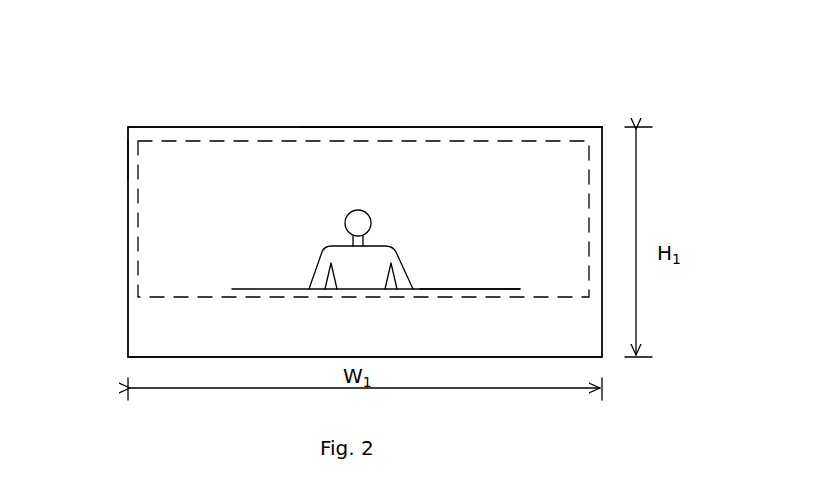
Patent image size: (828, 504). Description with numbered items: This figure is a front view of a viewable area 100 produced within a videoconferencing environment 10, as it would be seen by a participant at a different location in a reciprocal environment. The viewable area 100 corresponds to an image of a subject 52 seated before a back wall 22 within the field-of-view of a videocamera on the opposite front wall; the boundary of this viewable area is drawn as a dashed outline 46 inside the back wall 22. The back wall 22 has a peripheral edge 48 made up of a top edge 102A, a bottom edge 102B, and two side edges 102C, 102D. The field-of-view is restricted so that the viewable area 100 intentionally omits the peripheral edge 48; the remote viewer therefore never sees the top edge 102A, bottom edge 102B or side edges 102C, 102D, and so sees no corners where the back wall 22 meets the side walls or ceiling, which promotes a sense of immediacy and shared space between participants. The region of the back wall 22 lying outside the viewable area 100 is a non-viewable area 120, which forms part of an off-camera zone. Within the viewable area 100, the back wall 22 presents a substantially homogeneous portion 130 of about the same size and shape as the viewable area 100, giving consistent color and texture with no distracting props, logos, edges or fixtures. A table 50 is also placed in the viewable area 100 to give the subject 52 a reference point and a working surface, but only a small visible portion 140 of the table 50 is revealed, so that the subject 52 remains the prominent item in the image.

The environment 10 is at (243, 95).
The back wall 22 is at (530, 100).
The active display area boundary 46 is at (186, 141).
The peripheral edge 48 is at (128, 155).
The table 50 is at (462, 289).
The subject 52 is at (376, 243).
The viewable area 100 is at (348, 128).
The top edge 102A is at (378, 128).
The bottom edge 102B is at (478, 357).
The side edge 102C is at (128, 222).
The side edge 102D is at (602, 208).
The non-viewable area 120 is at (394, 336).
The substantially homogeneous portion 130 is at (268, 208).
The visible portion 140 is at (428, 289).